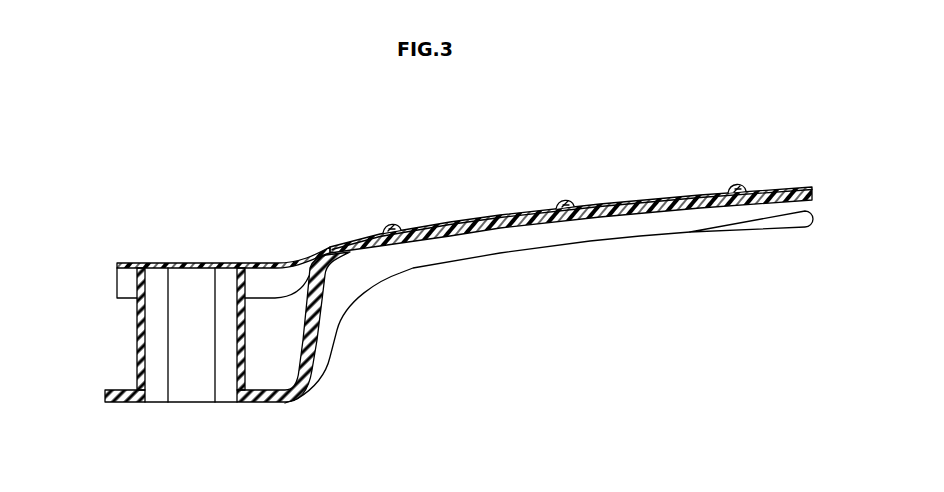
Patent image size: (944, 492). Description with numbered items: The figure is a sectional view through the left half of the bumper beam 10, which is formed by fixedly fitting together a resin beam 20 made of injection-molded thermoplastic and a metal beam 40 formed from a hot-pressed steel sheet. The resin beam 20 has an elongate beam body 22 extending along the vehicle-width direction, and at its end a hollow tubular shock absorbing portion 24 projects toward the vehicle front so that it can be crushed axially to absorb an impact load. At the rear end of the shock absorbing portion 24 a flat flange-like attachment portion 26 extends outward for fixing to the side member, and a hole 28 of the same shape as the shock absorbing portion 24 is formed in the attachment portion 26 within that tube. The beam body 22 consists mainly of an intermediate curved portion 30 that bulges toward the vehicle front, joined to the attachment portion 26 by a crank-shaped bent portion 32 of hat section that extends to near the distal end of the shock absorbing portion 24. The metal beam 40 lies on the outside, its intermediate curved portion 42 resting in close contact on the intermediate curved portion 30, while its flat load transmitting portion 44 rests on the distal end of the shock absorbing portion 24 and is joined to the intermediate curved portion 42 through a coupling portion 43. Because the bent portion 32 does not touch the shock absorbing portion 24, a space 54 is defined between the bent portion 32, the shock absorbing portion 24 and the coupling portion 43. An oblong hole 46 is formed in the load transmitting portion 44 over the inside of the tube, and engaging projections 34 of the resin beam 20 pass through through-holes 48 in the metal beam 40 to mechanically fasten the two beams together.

The bumper beam 10 is at (336, 130).
The resin beam 20 is at (266, 440).
The beam body 22 is at (655, 269).
The shock absorbing portion 24 is at (137, 328).
The attachment portion 26 is at (120, 400).
The hole 28 is at (229, 400).
The intermediate curved portion 30 is at (511, 234).
The bent portion 32 is at (316, 322).
The engaging projection 34 is at (389, 225).
The metal beam 40 is at (670, 158).
The intermediate curved portion 42 is at (467, 219).
The coupling portion 43 is at (282, 255).
The load transmitting portion 44 is at (150, 262).
The oblong hole 46 is at (200, 262).
The through-hole 48 is at (394, 236).
The space 54 is at (261, 349).